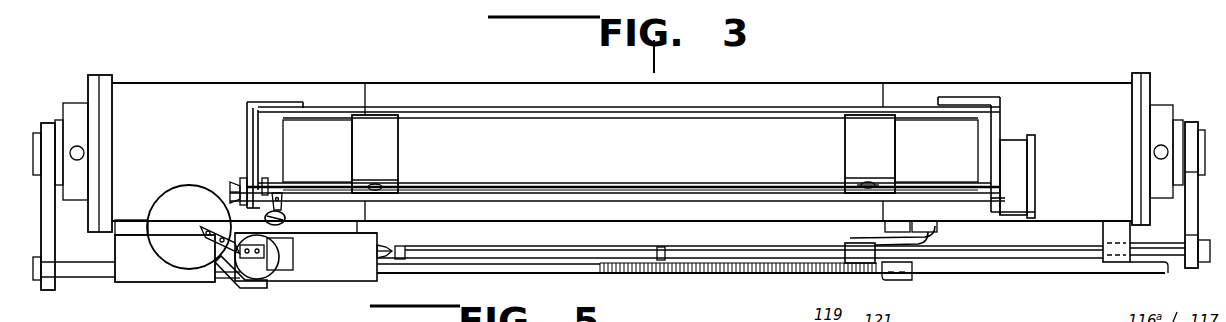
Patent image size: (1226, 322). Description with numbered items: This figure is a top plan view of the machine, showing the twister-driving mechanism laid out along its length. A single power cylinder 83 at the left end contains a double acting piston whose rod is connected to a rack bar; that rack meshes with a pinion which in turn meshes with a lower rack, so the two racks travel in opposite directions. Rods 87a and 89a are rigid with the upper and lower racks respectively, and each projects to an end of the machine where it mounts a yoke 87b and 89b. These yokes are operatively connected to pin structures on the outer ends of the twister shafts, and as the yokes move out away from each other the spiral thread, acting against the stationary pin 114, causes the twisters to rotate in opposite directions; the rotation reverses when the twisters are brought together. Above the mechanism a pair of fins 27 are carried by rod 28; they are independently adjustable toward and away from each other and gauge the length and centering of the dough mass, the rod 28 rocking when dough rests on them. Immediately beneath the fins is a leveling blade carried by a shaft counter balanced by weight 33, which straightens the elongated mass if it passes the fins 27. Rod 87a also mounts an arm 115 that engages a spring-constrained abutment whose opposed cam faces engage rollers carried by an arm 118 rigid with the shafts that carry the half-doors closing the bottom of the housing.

The fins 27 is at (378, 117).
The rod 28 is at (418, 187).
The weight 33 is at (285, 213).
The power cylinder 83 is at (152, 270).
The rod 89a is at (85, 272).
The yoke 89b is at (50, 230).
The stationary pin 114 is at (83, 151).
The arm 115 is at (933, 230).
The rod 87a is at (1095, 248).
The yoke 87b is at (1167, 250).
The arm 118 is at (1183, 295).